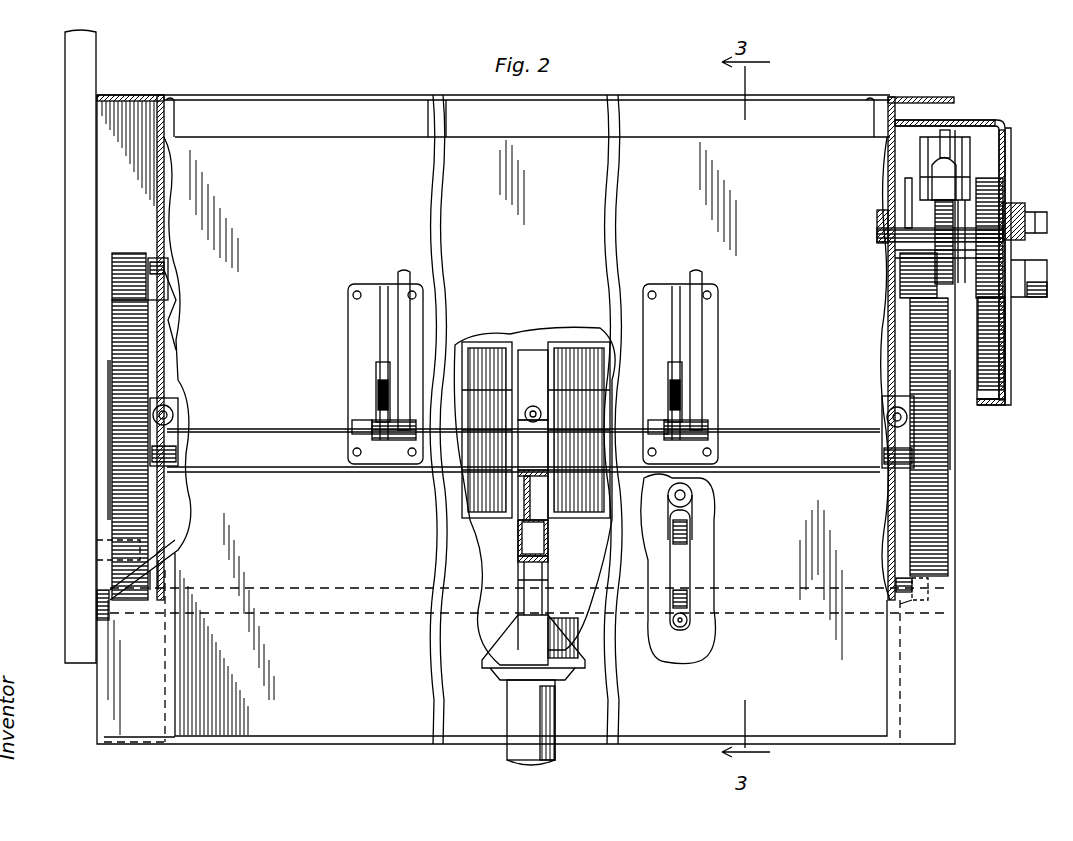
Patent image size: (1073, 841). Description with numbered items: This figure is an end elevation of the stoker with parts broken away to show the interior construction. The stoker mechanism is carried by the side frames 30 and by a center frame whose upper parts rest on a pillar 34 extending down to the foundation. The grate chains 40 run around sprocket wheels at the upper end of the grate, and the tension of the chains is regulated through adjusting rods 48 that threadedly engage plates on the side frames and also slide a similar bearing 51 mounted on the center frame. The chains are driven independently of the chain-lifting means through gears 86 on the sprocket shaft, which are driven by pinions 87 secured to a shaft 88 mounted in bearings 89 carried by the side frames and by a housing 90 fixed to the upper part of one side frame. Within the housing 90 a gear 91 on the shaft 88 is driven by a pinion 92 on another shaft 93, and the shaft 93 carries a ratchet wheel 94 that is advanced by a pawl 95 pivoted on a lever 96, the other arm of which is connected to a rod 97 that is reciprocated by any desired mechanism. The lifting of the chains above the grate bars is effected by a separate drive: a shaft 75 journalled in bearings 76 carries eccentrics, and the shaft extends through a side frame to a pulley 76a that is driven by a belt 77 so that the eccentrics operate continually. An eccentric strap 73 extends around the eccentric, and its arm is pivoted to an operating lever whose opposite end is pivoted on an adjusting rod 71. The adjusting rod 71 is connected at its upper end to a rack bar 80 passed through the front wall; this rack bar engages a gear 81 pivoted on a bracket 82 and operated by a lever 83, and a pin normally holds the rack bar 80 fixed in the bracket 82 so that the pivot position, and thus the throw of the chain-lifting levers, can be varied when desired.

The belt 77 is at (72, 438).
The pinion 87 is at (120, 256).
The bearing 89 is at (165, 265).
The side frame 30 is at (172, 318).
The adjusting rod 48 is at (172, 410).
The gear 86 is at (118, 500).
The pulley 76a is at (97, 545).
The lever 83 is at (402, 272).
The bracket 82 is at (352, 322).
The rack bar 80 is at (380, 376).
The gear 81 is at (384, 416).
The grate chain 40 is at (490, 340).
The bearing 51 is at (533, 448).
The shaft 75 is at (572, 590).
The pillar 34 is at (533, 690).
The adjusting rod 71 is at (690, 522).
The eccentric strap 73 is at (690, 570).
The housing 90 is at (1010, 146).
The rod 97 is at (940, 132).
The pawl 95 is at (955, 140).
The lever 96 is at (932, 168).
The ratchet wheel 94 is at (940, 216).
The pinion 92 is at (1004, 206).
The shaft 93 is at (1022, 222).
The shaft 88 is at (1032, 275).
The gear 91 is at (1003, 335).
The bearing 76 is at (930, 592).